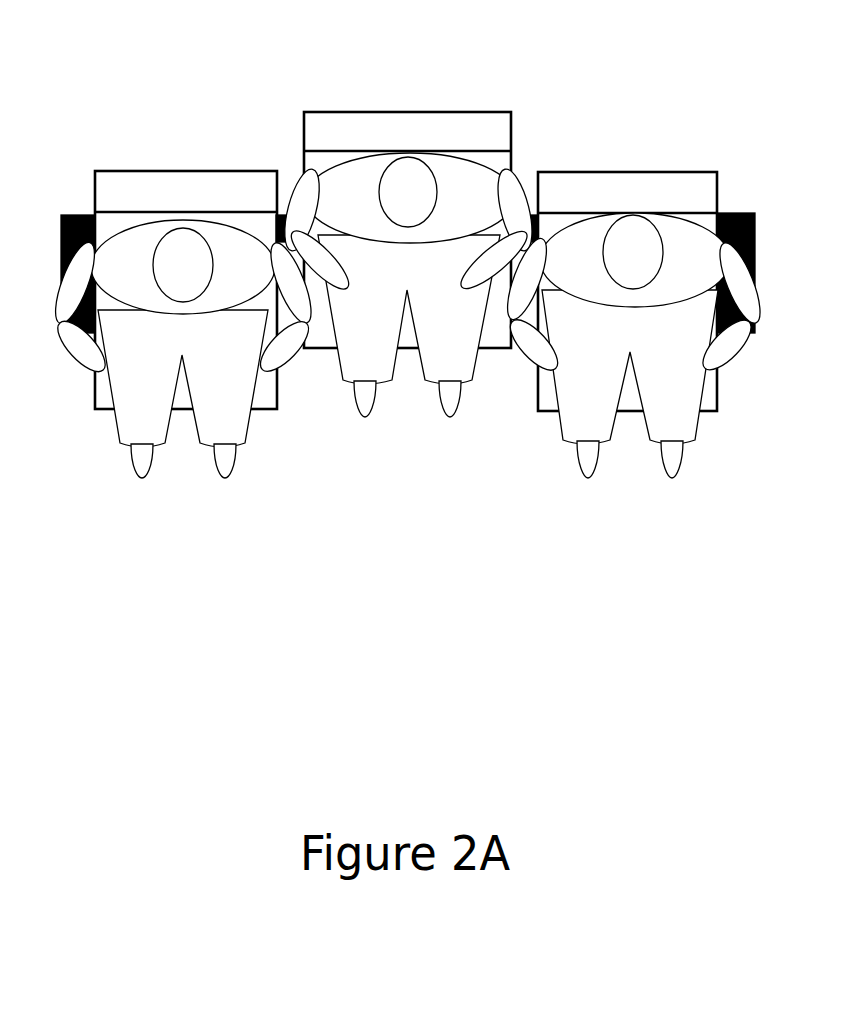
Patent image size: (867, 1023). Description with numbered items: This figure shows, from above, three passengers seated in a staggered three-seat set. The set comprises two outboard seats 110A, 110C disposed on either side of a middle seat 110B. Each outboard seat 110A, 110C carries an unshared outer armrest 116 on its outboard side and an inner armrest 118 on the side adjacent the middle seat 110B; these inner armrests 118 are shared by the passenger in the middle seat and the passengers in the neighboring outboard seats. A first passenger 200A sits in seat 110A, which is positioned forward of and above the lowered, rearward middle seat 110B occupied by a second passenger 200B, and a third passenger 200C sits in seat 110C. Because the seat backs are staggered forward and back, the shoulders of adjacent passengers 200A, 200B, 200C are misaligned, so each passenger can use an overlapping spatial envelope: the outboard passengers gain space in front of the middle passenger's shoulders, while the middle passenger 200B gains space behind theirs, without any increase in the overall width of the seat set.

The outboard seat 110A is at (634, 167).
The middle seat 110B is at (391, 109).
The outboard seat 110C is at (181, 168).
The outer armrest 116 is at (72, 215).
The inner armrest 118 is at (283, 215).
The first passenger 200A is at (606, 342).
The second passenger 200B is at (379, 282).
The passenger 200C is at (158, 344).